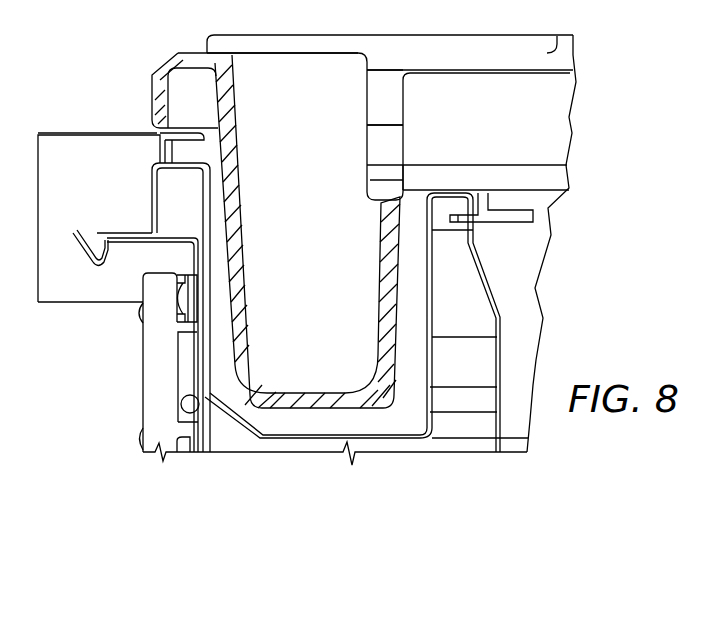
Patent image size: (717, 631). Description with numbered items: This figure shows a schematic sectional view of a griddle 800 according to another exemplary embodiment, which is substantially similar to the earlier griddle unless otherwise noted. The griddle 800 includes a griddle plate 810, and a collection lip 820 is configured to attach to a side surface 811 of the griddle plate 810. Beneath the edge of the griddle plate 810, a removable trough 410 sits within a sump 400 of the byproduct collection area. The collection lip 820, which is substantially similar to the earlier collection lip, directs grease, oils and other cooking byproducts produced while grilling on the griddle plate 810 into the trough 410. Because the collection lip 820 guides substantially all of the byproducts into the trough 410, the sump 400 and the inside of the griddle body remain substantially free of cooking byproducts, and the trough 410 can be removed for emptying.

The sump 400 is at (277, 425).
The trough 410 is at (163, 83).
The griddle 800 is at (533, 108).
The griddle plate 810 is at (547, 177).
The side surface 811 is at (400, 183).
The collection lip 820 is at (392, 178).